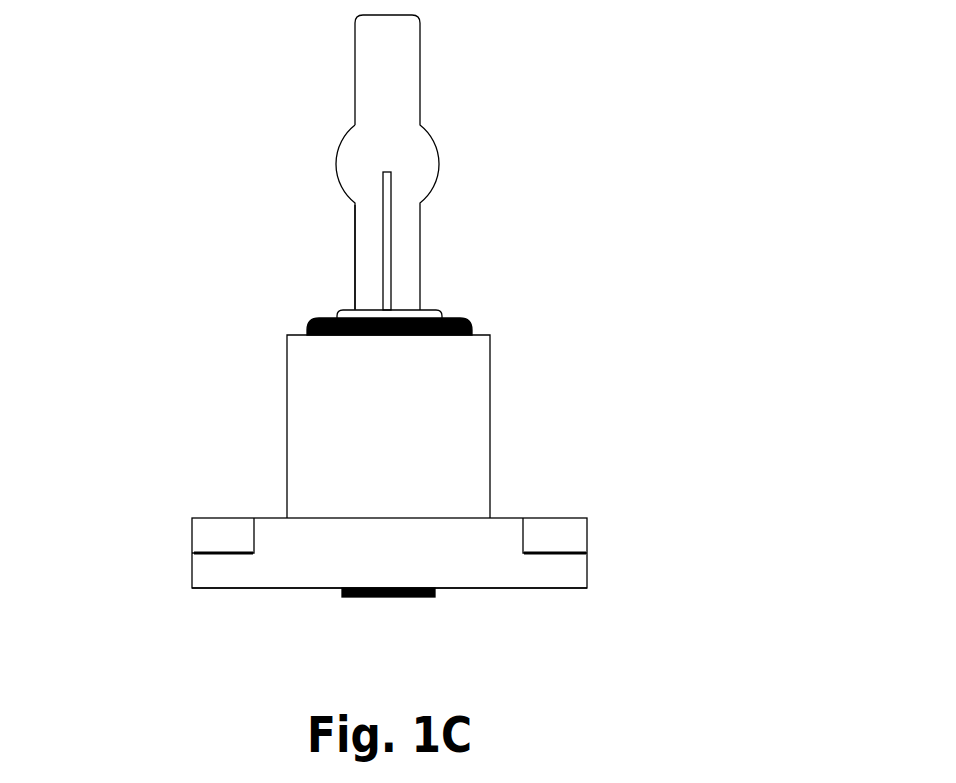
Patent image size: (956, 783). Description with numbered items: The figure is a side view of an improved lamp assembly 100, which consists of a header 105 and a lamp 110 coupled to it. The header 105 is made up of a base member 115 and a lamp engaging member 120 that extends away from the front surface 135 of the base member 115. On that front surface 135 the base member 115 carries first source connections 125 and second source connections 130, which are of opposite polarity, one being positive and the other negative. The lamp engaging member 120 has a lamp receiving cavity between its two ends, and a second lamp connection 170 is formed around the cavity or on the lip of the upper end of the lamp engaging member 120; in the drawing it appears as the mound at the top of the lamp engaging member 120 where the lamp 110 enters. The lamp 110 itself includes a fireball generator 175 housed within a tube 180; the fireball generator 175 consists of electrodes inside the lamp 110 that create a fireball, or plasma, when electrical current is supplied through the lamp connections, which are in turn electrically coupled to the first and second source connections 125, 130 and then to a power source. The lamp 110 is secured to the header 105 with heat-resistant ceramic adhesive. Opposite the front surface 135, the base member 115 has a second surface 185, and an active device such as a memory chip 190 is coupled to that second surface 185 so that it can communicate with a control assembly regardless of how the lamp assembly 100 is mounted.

The improved lamp assembly 100 is at (170, 82).
The header 105 is at (222, 447).
The lamp 110 is at (458, 154).
The base member 115 is at (411, 565).
The lamp engaging member 120 is at (490, 427).
The first source connections 125 is at (560, 556).
The second source connections 130 is at (192, 552).
The front surface 135 is at (513, 518).
The second lamp connection 170 is at (490, 337).
The fireball generator 175 is at (387, 171).
The tube 180 is at (352, 215).
The second surface 185 is at (237, 588).
The memory chip 190 is at (388, 598).